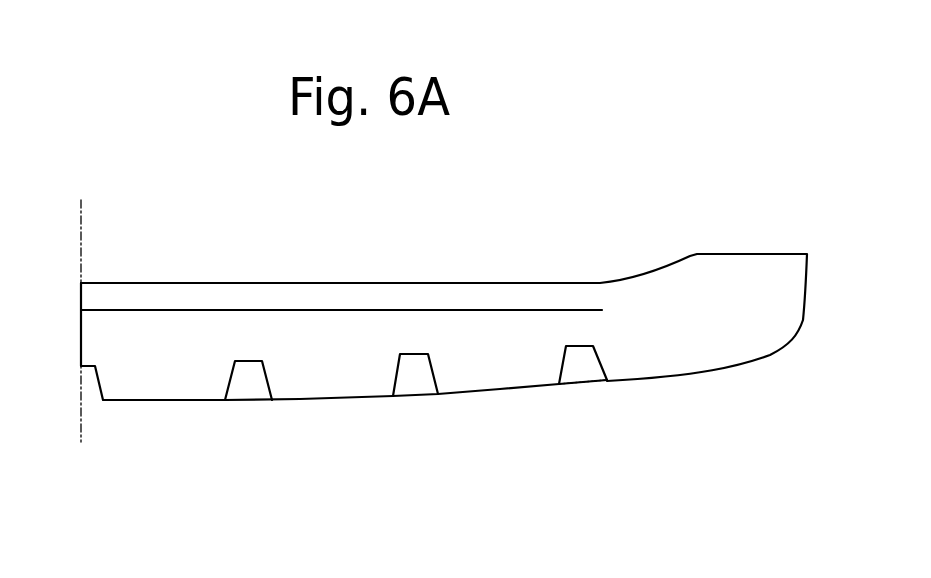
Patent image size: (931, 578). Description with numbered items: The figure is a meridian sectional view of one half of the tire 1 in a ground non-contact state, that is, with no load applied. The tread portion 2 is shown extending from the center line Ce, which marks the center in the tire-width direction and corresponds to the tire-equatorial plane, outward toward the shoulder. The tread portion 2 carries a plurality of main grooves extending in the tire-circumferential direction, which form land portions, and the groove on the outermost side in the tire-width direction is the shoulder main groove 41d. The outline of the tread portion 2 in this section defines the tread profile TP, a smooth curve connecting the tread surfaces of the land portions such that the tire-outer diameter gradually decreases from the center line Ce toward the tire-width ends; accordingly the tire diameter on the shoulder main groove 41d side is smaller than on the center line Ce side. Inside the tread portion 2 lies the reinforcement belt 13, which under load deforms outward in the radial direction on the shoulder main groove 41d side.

The tire 1 is at (645, 248).
The reinforcement belt 13 is at (425, 309).
The tread portion 2 is at (354, 378).
The tread profile TP is at (236, 405).
The shoulder main groove 41d is at (578, 388).
The center line Ce is at (82, 218).